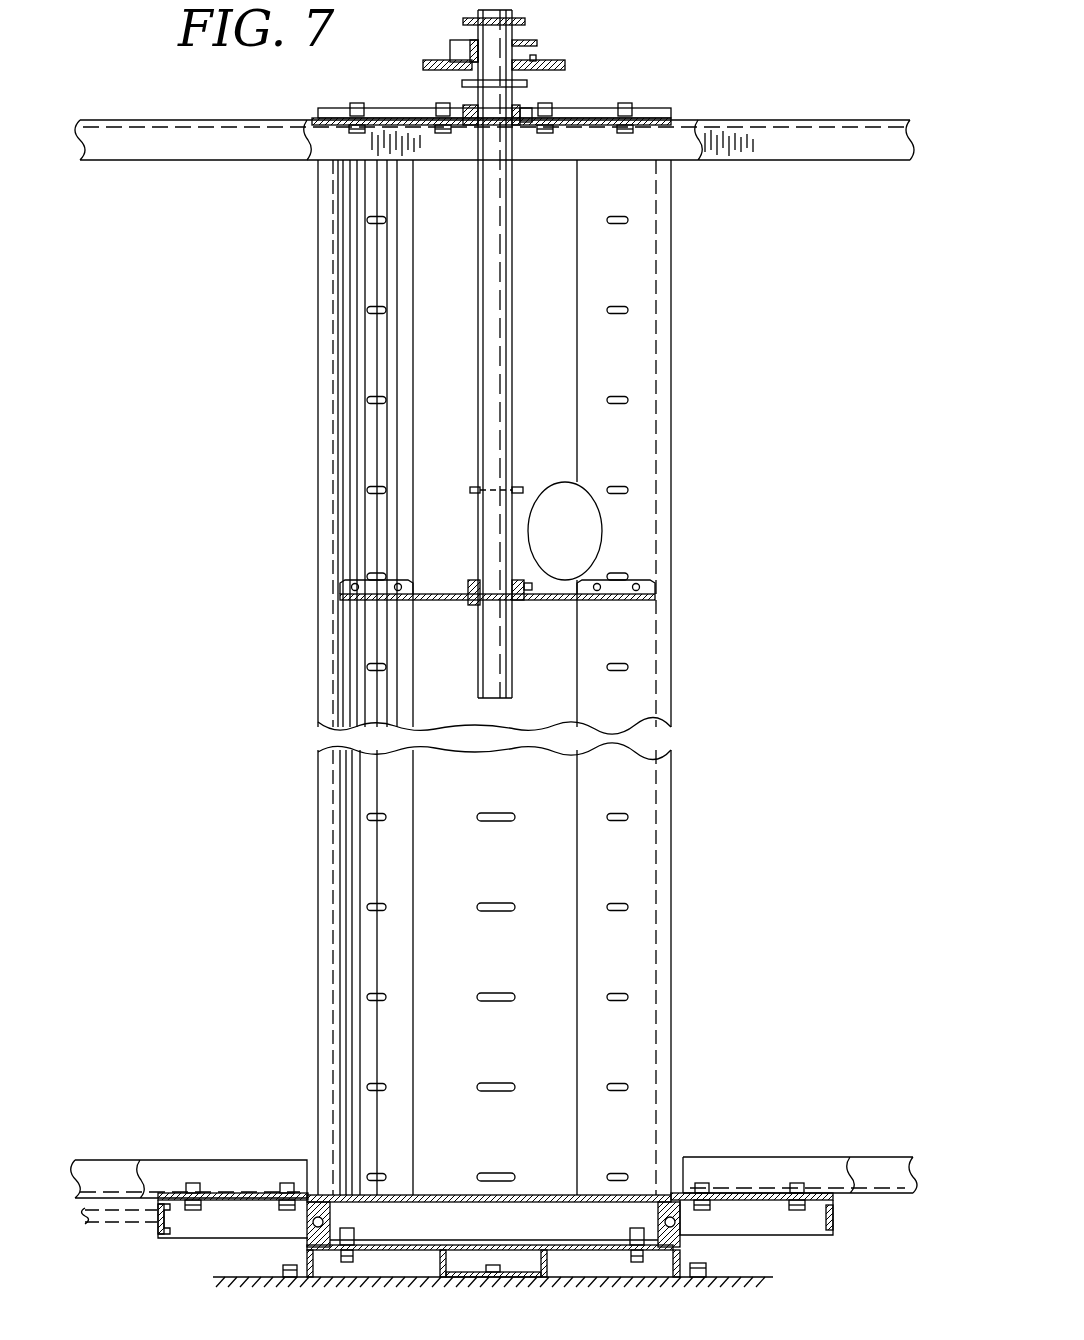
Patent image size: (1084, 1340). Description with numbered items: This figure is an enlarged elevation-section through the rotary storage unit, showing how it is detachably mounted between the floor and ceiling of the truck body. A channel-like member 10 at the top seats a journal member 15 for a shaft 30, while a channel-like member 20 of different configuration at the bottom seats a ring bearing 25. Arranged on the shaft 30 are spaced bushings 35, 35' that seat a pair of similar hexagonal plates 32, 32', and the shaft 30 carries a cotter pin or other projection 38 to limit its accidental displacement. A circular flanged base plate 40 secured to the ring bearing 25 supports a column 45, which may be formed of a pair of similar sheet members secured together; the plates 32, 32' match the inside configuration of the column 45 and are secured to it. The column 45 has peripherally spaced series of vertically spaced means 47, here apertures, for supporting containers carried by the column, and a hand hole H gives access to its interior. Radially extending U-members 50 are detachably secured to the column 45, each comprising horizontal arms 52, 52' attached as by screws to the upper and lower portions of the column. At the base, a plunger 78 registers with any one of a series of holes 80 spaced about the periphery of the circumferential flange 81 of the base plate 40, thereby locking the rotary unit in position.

The channel-like member 10 is at (455, 50).
The journal member 15 is at (524, 32).
The channel-like member 20 is at (306, 1257).
The ring bearing 25 is at (682, 1222).
The shaft 30 is at (509, 347).
The polygonal plate 32 is at (491, 94).
The polygonal plate 32' is at (497, 625).
The bushing 35 is at (537, 78).
The bushing 35' is at (478, 570).
The cotter pin 38 is at (518, 487).
The flanged base plate 40 is at (833, 1234).
The column 45 is at (656, 848).
The vertically spaced means 47 is at (490, 995).
The U-member 50 is at (798, 120).
The horizontal arm 52 is at (494, 140).
The horizontal arm 52' is at (494, 1151).
The plunger 78 is at (112, 1225).
The hole 80 is at (158, 1215).
The circumferential flange 81 is at (200, 1225).
The hand hole H is at (598, 531).